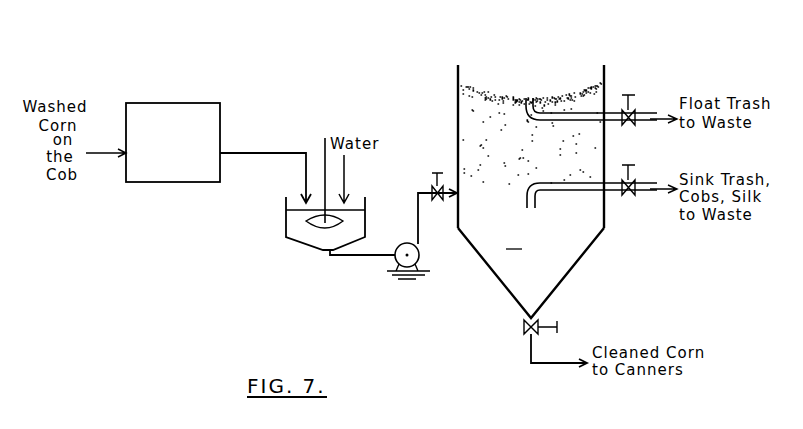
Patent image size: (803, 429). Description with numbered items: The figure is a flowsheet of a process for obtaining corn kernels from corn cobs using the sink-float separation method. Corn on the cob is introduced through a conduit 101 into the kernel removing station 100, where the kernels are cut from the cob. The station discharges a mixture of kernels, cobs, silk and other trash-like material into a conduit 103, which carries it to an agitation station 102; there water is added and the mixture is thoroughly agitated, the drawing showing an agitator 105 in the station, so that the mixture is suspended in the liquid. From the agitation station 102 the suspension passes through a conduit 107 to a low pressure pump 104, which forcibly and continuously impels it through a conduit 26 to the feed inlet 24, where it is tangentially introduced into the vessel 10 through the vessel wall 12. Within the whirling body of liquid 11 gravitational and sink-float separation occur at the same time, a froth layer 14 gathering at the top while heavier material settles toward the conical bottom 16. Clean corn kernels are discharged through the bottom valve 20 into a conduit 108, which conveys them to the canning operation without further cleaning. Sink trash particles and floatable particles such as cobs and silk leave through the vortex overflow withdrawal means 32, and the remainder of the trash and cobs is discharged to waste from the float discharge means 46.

The vessel 10 is at (552, 175).
The whirling body of liquid 11 is at (516, 241).
The tank side wall 12 is at (606, 145).
The froth layer 14 is at (572, 83).
The conical bottom 16 is at (550, 296).
The bottom discharge valve 20 is at (523, 317).
The feed inlet 24 is at (455, 190).
The conduit 26 is at (418, 226).
The vortex overflow withdrawal means 32 is at (610, 192).
The float discharge means 46 is at (606, 112).
The kernel removing station 100 is at (155, 103).
The conduit 101 is at (103, 155).
The agitation station 102 is at (294, 227).
The conduit 103 is at (246, 153).
The low pressure pump 104 is at (413, 256).
The agitator 105 is at (343, 168).
The conduit 107 is at (360, 258).
The conduit 108 is at (553, 365).